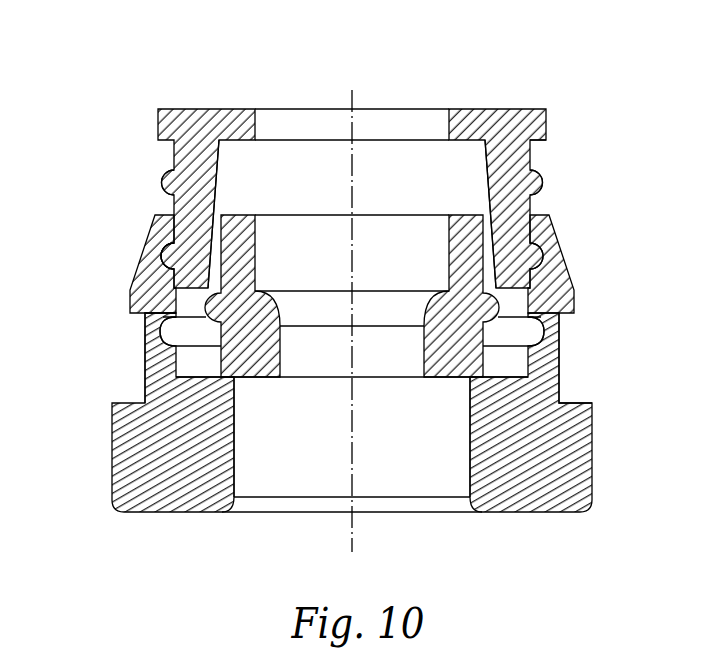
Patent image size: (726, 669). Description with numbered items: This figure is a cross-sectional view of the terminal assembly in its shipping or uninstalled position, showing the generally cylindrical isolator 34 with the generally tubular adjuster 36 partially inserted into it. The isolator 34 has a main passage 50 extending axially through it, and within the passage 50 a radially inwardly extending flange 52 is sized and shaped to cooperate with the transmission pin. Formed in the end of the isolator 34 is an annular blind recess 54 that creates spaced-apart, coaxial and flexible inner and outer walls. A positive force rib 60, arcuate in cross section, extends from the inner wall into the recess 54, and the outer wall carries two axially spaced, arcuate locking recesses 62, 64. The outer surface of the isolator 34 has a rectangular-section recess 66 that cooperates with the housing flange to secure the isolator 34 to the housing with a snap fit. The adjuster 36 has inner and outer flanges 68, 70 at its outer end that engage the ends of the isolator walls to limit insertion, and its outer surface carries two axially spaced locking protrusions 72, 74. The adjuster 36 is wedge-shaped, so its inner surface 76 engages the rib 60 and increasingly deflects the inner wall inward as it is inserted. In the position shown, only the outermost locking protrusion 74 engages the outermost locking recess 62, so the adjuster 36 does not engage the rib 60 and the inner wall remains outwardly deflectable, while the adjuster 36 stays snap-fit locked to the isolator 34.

The isolator 34 is at (593, 462).
The adjuster 36 is at (508, 110).
The main passage 50 is at (470, 458).
The flange 52 is at (276, 380).
The annular blind recess 54 is at (183, 366).
The positive force rib 60 is at (501, 315).
The locking recess 62 is at (158, 238).
The locking recess 64 is at (160, 331).
The recess 66 is at (560, 370).
The inner flange 68 is at (470, 141).
The outer flange 70 is at (540, 142).
The locking protrusion 72 is at (164, 178).
The locking protrusion 74 is at (133, 284).
The inner surface 76 is at (217, 183).